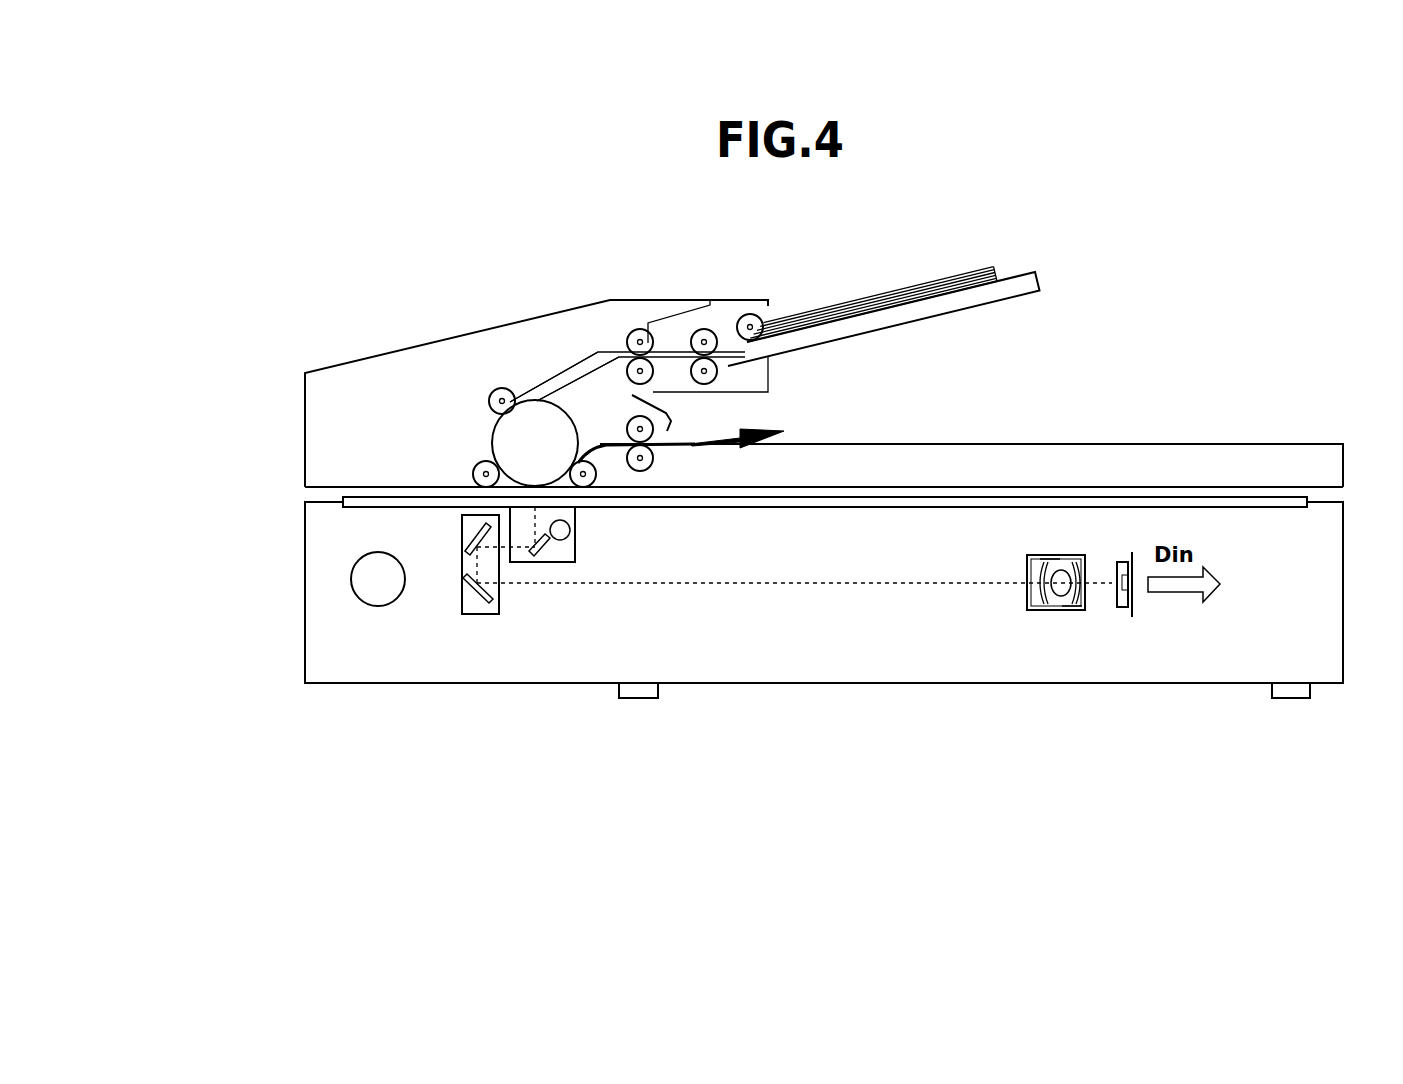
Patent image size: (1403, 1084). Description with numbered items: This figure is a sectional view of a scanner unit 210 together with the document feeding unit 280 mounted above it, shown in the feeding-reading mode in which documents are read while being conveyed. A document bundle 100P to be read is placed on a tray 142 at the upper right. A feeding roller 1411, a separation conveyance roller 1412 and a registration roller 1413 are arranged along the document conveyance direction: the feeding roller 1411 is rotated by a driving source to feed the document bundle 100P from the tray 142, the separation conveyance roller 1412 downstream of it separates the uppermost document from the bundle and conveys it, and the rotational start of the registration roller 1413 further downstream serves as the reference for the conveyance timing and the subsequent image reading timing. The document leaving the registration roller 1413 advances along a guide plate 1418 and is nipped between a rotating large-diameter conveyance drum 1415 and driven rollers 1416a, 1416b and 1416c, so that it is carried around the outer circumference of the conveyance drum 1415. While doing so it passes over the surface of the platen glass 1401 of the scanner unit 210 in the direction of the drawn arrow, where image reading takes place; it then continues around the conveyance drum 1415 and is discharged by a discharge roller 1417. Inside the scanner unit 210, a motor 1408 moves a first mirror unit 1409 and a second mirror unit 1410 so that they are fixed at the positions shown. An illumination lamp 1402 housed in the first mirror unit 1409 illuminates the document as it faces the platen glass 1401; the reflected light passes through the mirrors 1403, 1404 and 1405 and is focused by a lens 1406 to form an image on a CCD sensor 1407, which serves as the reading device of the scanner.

The document bundle 100P is at (1000, 268).
The tray 142 is at (1042, 280).
The document feeding unit 280 is at (888, 444).
The scanner unit 210 is at (304, 650).
The platen glass 1401 is at (342, 507).
The illumination lamp 1402 is at (571, 528).
The mirror 1403 is at (552, 548).
The mirror 1404 is at (466, 534).
The mirror 1405 is at (470, 595).
The lens 1406 is at (1052, 611).
The CCD sensor 1407 is at (1134, 615).
The motor 1408 is at (351, 580).
The first mirror unit 1409 is at (545, 563).
The second mirror unit 1410 is at (482, 614).
The feeding roller 1411 is at (750, 313).
The separation conveyance roller 1412 is at (701, 328).
The registration roller 1413 is at (636, 328).
The conveyance drum 1415 is at (492, 440).
The driven roller 1416a is at (496, 388).
The driven roller 1416b is at (473, 474).
The driven roller 1416c is at (600, 477).
The discharge roller 1417 is at (667, 406).
The guide plate 1418 is at (568, 360).